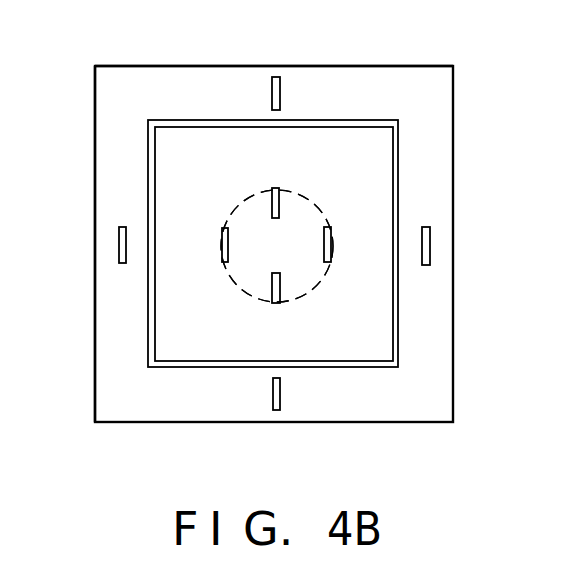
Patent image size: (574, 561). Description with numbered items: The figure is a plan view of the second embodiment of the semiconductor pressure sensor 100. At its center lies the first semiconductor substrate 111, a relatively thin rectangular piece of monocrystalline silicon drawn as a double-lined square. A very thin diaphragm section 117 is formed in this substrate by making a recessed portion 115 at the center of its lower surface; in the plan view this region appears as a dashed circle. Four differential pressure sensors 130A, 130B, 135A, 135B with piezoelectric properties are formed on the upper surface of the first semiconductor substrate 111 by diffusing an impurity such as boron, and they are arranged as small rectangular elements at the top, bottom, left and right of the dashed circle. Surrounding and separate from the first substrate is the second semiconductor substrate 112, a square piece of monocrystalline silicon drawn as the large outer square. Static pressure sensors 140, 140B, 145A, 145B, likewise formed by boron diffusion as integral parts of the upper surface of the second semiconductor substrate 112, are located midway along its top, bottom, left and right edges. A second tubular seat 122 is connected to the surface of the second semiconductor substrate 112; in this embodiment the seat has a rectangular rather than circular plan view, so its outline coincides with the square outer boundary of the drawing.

The semiconductor pressure sensor 100 is at (96, 217).
The first semiconductor substrate 111 is at (398, 175).
The second semiconductor substrate 112 is at (415, 52).
The recessed portion 115 is at (303, 275).
The diaphragm section 117 is at (245, 265).
The second tubular seat 122 is at (497, 51).
The differential pressure sensor 130A is at (279, 200).
The differential pressure sensor 130B is at (273, 296).
The differential pressure sensor 135A is at (222, 245).
The differential pressure sensor 135B is at (331, 247).
The static pressure sensor 140 is at (280, 86).
The static pressure sensor 140B is at (280, 398).
The static pressure sensor 145A is at (119, 252).
The static pressure sensor 145B is at (430, 257).